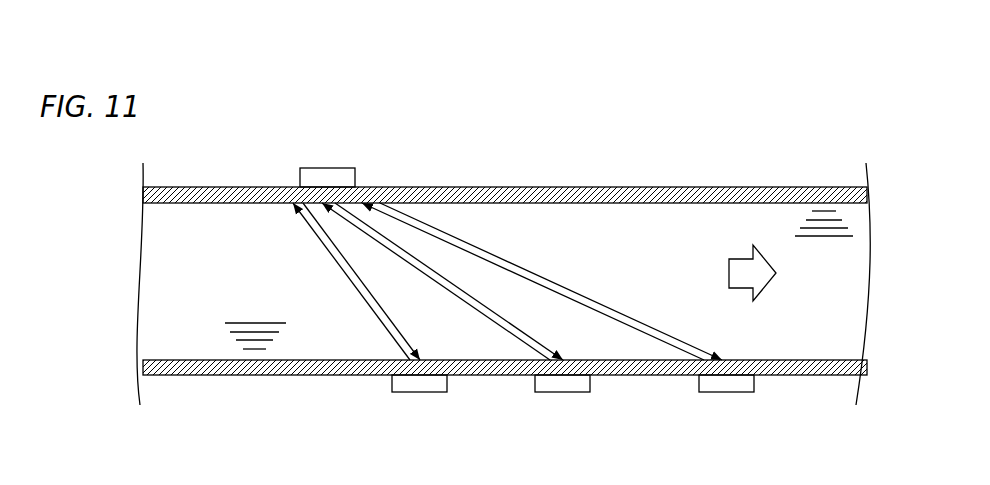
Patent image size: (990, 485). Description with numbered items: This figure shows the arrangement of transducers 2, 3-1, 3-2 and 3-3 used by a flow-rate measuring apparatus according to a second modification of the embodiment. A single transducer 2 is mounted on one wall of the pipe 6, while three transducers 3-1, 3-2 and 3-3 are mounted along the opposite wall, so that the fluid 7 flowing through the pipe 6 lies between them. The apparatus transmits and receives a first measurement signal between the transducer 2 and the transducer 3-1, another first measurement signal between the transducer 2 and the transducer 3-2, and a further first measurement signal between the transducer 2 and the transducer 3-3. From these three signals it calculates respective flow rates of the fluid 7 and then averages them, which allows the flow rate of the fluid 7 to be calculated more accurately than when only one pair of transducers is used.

The transducer 2 is at (298, 185).
The transducer 3-1 is at (447, 380).
The transducer 3-2 is at (590, 380).
The transducer 3-3 is at (754, 380).
The pipe 6 is at (530, 190).
The fluid 7 is at (829, 285).